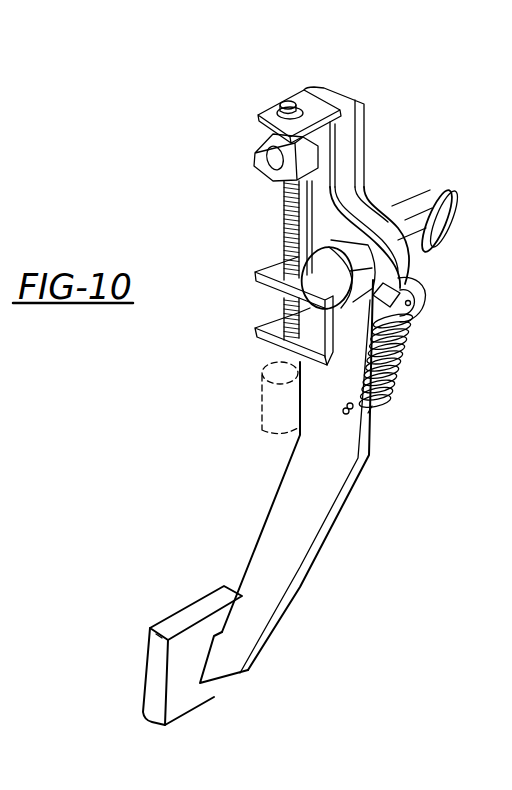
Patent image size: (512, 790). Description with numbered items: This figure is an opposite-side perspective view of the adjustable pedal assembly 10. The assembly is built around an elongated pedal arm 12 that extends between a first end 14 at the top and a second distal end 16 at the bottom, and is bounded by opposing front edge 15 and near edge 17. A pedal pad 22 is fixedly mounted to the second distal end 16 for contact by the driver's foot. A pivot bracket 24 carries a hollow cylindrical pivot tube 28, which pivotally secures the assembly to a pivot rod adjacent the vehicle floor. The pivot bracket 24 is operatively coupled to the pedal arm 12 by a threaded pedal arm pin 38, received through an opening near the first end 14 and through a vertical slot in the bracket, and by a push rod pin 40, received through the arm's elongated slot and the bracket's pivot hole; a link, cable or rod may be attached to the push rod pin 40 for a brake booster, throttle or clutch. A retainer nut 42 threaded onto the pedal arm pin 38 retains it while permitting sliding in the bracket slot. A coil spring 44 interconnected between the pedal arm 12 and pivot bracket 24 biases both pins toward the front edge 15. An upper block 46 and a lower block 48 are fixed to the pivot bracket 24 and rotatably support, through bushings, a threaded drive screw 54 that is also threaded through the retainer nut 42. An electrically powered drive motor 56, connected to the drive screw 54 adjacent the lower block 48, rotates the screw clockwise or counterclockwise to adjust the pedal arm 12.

The pedal assembly 10 is at (455, 138).
The pedal arm 12 is at (318, 556).
The first end 14 is at (352, 97).
The front edge 15 is at (272, 505).
The second distal end 16 is at (218, 668).
The near edge 17 is at (277, 606).
The pedal pad 22 is at (143, 707).
The pivot bracket 24 is at (345, 183).
The pivot tube 28 is at (452, 205).
The pedal arm pin 38 is at (277, 162).
The push rod pin 40 is at (262, 374).
The retainer nut 42 is at (256, 158).
The coil spring 44 is at (393, 392).
The upper block 46 is at (300, 93).
The lower block 48 is at (256, 322).
The drive screw 54 is at (283, 240).
The drive motor 56 is at (262, 420).